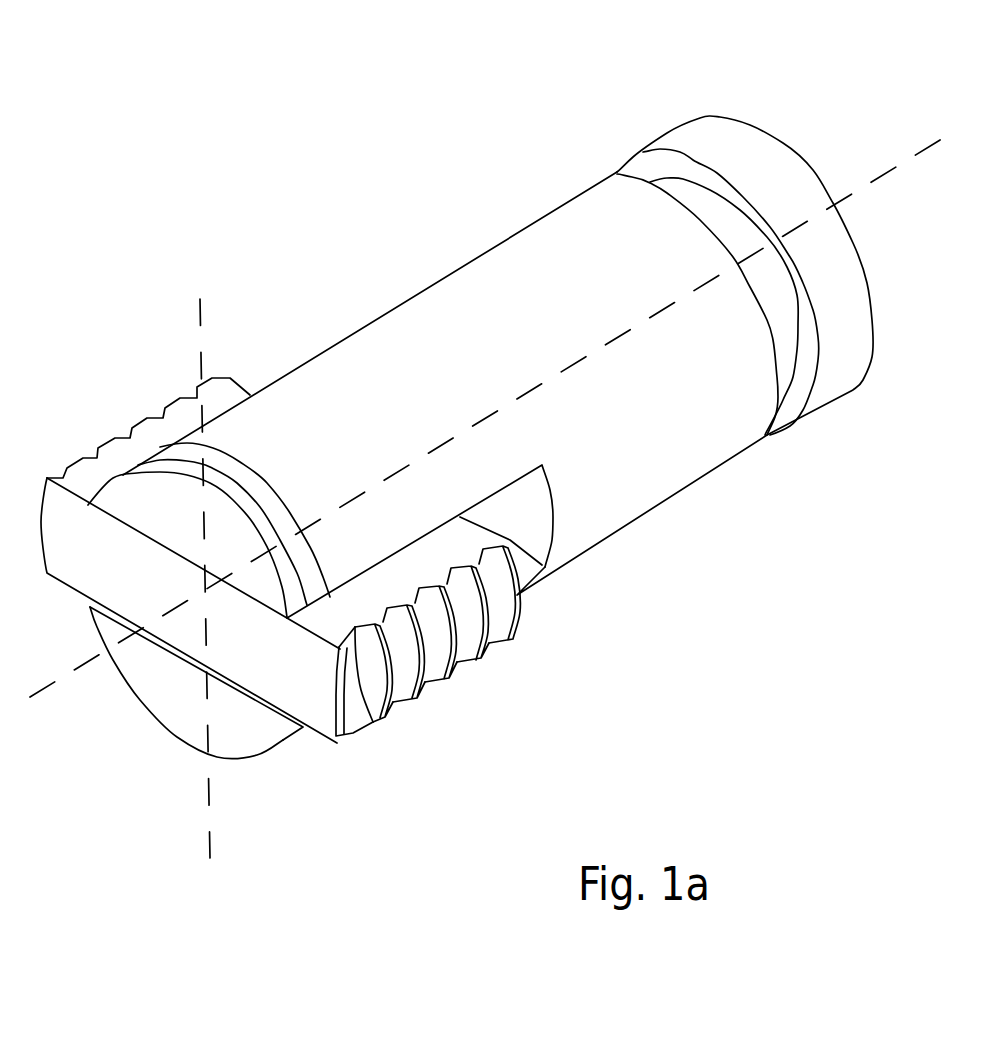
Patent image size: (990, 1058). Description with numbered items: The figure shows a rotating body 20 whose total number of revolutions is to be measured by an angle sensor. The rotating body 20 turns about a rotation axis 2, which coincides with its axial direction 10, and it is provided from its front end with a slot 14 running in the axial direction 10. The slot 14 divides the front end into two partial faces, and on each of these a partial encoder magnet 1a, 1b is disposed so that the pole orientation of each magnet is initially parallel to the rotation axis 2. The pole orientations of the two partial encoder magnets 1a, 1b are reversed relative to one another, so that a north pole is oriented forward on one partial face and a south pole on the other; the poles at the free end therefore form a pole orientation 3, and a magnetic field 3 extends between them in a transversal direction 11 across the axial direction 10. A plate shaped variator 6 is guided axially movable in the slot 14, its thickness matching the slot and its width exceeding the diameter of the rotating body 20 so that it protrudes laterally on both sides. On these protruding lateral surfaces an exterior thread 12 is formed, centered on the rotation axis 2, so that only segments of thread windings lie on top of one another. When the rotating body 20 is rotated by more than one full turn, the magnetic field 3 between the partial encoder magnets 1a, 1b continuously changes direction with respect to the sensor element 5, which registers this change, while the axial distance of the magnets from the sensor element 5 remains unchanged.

The partial encoder magnet 1a is at (248, 758).
The partial encoder magnet 1b is at (167, 478).
The rotation axis 2 is at (487, 382).
The axial direction 10 is at (853, 192).
The magnetic field 3 is at (210, 777).
The transversal direction 11 is at (144, 588).
The sensor element 5 is at (234, 524).
The variator 6 is at (437, 633).
The exterior thread 12 is at (362, 730).
The slot 14 is at (530, 528).
The rotating body 20 is at (498, 355).